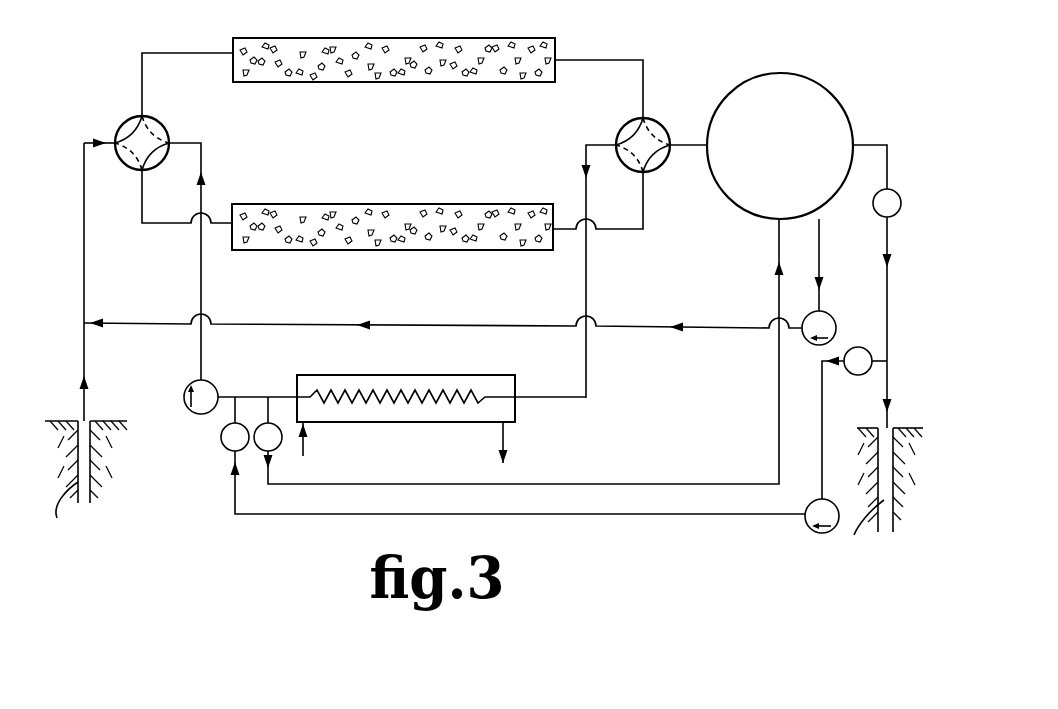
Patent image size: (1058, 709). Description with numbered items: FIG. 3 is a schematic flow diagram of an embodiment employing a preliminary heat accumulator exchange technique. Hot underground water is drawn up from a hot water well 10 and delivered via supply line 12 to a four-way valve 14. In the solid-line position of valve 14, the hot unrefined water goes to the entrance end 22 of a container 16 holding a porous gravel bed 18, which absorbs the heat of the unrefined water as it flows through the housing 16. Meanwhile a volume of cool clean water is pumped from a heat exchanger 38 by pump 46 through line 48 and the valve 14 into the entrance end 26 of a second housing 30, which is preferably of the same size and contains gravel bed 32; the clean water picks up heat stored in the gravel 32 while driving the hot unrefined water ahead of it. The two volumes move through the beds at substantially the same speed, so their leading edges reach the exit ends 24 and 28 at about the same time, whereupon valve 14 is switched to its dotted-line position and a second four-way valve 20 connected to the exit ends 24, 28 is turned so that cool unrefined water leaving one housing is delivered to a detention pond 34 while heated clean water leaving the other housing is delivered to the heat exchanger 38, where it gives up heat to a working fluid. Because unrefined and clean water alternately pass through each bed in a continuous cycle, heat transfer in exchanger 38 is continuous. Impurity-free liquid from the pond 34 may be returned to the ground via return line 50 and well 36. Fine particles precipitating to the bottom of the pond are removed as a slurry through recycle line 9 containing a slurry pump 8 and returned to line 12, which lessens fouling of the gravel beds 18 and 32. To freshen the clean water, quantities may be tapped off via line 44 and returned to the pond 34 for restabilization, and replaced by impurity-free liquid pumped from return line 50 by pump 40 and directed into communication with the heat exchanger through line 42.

The slurry pump 8 is at (832, 318).
The recycle line 9 is at (695, 329).
The hot water well 10 is at (95, 455).
The supply line 12 is at (84, 290).
The four-way valve 14 is at (128, 118).
The container 16 is at (394, 65).
The gravel bed 18 is at (295, 63).
The second four-way valve 20 is at (660, 122).
The entrance end 22 is at (233, 47).
The exit end 24 is at (558, 50).
The entrance end 26 is at (232, 249).
The exit end 28 is at (553, 250).
The second housing 30 is at (415, 204).
The gravel bed 32 is at (392, 209).
The detention pond 34 is at (782, 73).
The well 36 is at (893, 428).
The heat exchanger 38 is at (413, 375).
The pump 40 is at (810, 529).
The line 42 is at (632, 514).
The line 44 is at (633, 484).
The pump 46 is at (190, 411).
The line 48 is at (201, 345).
The return line 50 is at (887, 318).